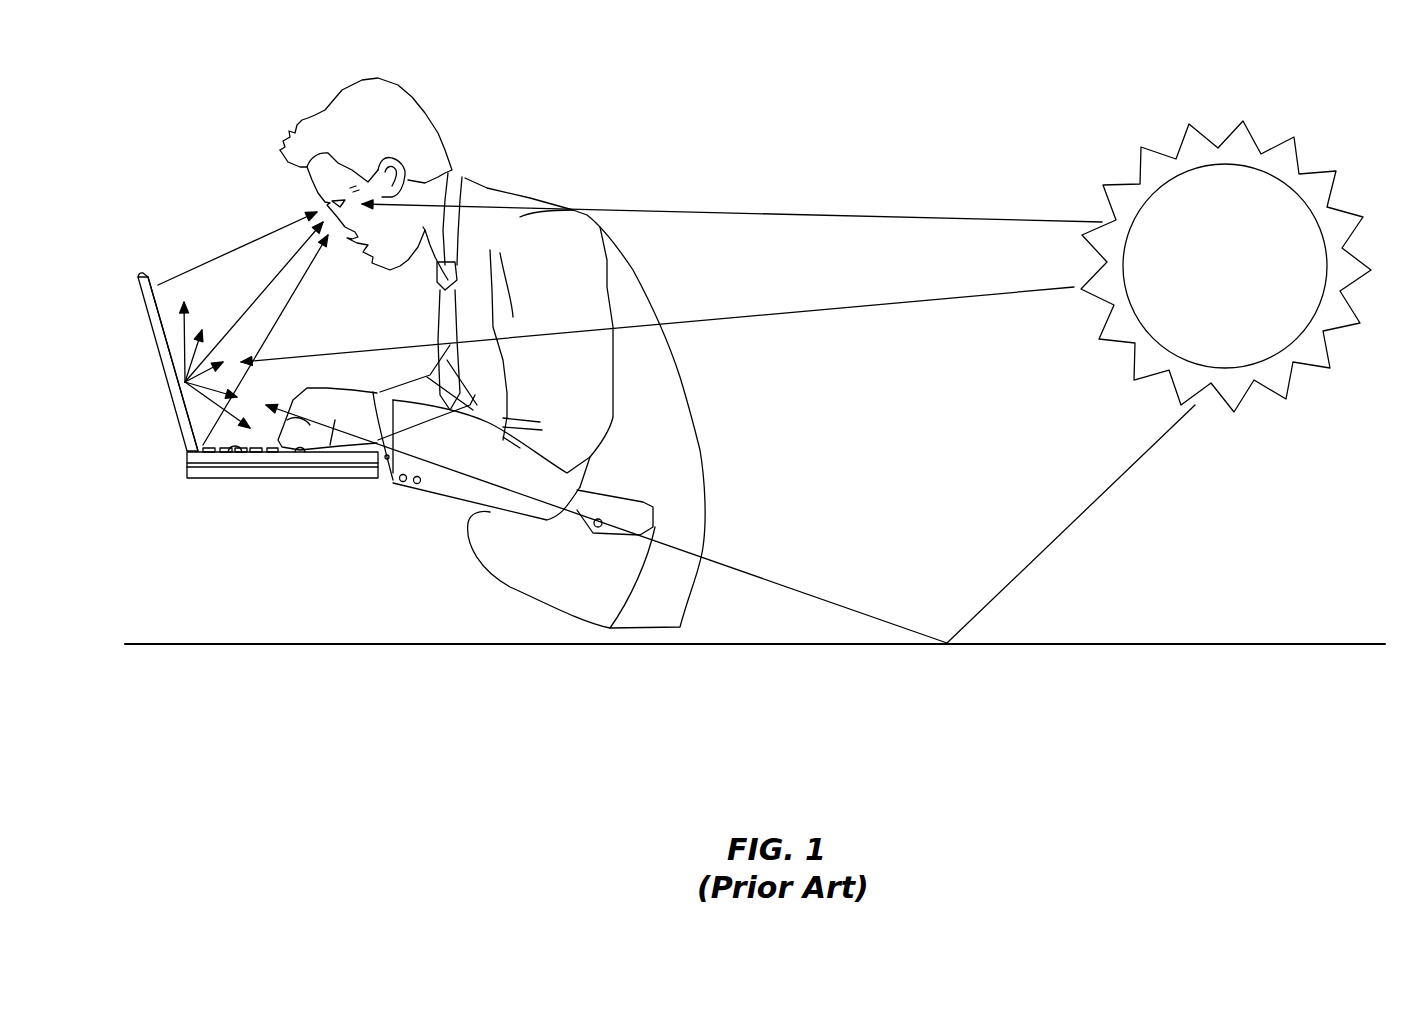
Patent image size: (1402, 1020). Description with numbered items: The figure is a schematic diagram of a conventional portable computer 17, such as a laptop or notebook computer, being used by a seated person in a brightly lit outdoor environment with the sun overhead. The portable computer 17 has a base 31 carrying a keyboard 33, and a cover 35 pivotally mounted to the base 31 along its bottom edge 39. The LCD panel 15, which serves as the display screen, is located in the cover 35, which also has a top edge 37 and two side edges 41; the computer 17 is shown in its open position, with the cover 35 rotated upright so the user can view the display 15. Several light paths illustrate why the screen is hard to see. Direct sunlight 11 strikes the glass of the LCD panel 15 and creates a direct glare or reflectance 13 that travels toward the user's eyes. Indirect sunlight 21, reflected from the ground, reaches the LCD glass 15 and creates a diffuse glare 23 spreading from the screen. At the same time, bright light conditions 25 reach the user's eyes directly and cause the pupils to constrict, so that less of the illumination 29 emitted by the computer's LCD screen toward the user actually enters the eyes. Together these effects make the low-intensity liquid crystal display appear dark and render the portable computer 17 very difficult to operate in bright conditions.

The direct sunlight 11 is at (925, 302).
The direct glare or reflectance 13 is at (267, 280).
The LCD panel 15 is at (158, 310).
The portable computer 17 is at (230, 379).
The indirect sunlight 21 is at (845, 607).
The diffuse glare 23 is at (237, 418).
The bright light conditions 25 is at (762, 213).
The illumination 29 is at (278, 230).
The base 31 is at (295, 448).
The keyboard 33 is at (232, 452).
The cover 35 is at (152, 280).
The top edge 37 is at (142, 275).
The bottom edge 39 is at (185, 450).
The side edges 41 is at (167, 363).